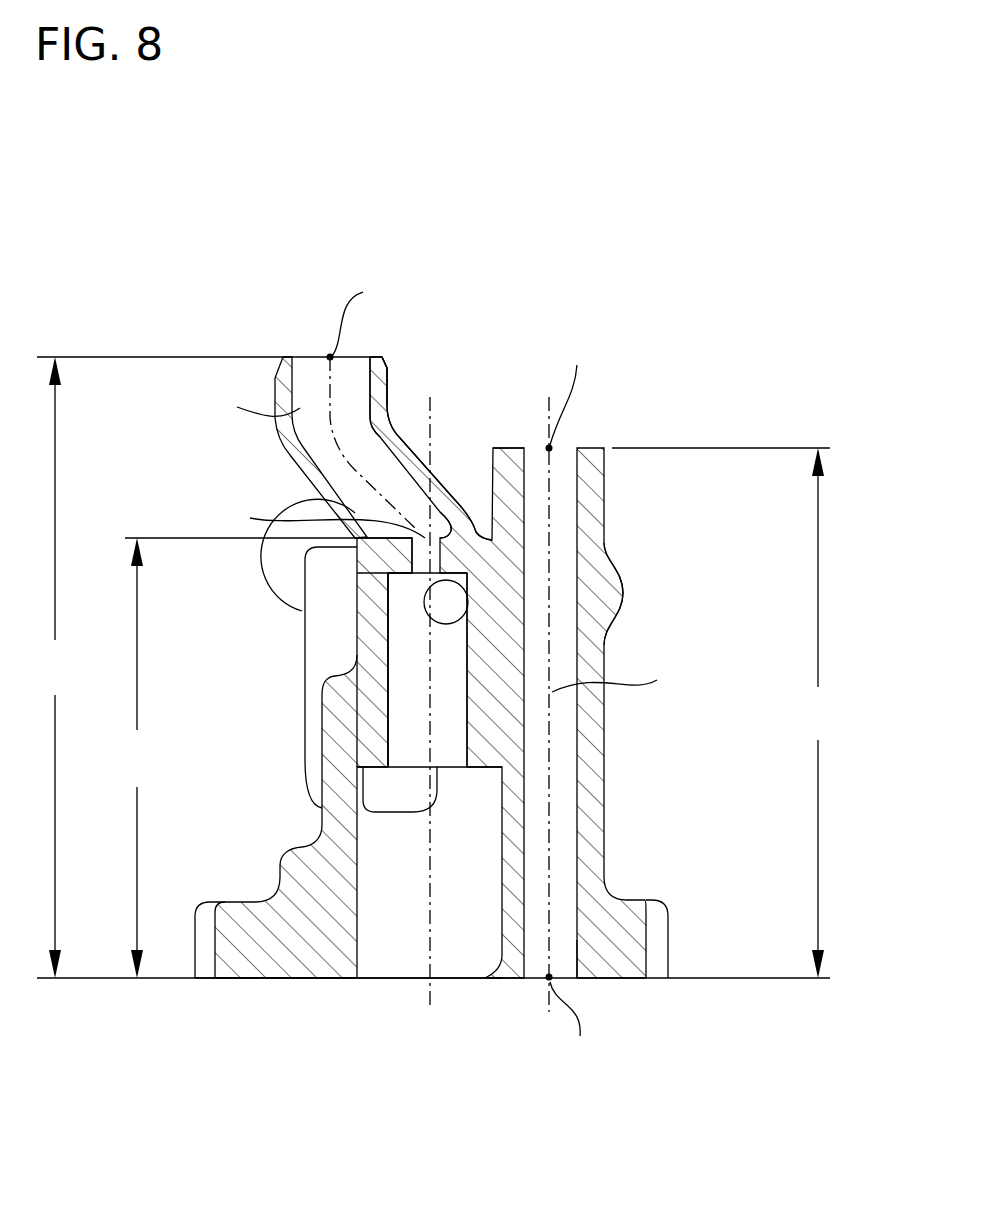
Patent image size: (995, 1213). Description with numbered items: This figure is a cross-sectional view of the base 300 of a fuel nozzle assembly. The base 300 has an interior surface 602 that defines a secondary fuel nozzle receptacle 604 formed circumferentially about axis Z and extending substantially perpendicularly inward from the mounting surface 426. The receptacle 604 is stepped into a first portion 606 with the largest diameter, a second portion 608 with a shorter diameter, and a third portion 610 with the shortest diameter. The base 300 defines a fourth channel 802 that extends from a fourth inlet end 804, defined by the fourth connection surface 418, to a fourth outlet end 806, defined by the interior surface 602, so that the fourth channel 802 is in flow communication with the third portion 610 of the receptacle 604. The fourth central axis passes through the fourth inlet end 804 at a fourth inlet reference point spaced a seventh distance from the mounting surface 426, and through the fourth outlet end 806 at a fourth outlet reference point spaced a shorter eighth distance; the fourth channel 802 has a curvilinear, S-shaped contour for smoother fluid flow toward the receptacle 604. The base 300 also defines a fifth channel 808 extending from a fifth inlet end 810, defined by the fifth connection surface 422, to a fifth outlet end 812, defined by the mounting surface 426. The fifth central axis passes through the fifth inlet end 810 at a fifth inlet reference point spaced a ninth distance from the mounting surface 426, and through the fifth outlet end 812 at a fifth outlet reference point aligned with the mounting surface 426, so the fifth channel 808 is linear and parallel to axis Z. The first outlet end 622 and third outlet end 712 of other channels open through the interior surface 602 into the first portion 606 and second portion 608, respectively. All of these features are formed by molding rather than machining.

The base 300 is at (213, 200).
The fourth connection surface 418 is at (380, 357).
The fifth connection surface 422 is at (590, 448).
The mounting surface 426 is at (258, 978).
The interior surface 602 is at (485, 978).
The secondary fuel nozzle receptacle 604 is at (370, 942).
The first portion 606 is at (343, 855).
The second portion 608 is at (374, 683).
The third portion 610 is at (394, 562).
The first outlet end 622 is at (392, 802).
The third outlet end 712 is at (456, 610).
The fourth channel 802 is at (337, 482).
The fourth inlet end 804 is at (308, 340).
The fourth outlet end 806 is at (438, 522).
The fifth channel 808 is at (570, 558).
The fifth inlet end 810 is at (534, 434).
The fifth outlet end 812 is at (567, 950).